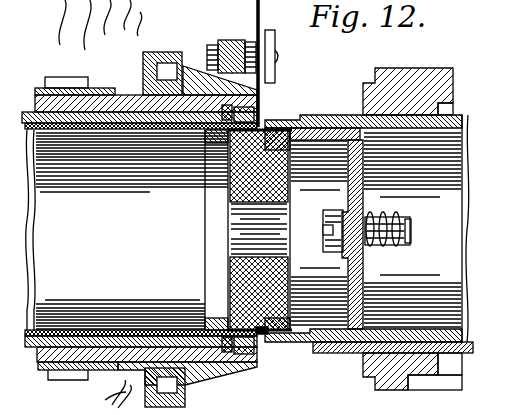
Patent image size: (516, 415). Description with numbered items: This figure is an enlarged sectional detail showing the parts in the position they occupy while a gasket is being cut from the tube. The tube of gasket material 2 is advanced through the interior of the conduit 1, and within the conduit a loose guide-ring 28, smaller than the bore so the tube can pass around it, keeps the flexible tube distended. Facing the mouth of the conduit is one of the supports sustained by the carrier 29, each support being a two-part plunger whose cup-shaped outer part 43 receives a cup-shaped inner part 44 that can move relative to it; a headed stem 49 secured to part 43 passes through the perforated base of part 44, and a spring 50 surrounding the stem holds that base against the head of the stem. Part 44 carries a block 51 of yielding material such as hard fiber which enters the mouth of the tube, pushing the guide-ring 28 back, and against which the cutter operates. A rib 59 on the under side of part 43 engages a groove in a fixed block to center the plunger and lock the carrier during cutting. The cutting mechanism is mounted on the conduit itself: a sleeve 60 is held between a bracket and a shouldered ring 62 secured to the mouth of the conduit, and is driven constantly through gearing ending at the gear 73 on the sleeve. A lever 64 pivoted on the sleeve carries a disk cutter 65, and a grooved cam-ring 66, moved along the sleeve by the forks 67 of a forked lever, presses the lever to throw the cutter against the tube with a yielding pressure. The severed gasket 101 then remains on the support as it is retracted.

The conduit 1 is at (31, 111).
The tube of gasket material 2 is at (83, 132).
The loose guide-ring 28 is at (240, 230).
The carrier 29 is at (450, 70).
The cup-shaped plunger part 43 is at (360, 118).
The inner plunger part 44 is at (364, 292).
The headed stem 49 is at (408, 238).
The spring 50 is at (398, 216).
The block 51 is at (288, 194).
The rib 59 is at (470, 348).
The sleeve 60 is at (127, 95).
The ring 62 is at (259, 108).
The lever 64 is at (246, 40).
The disk cutter 65 is at (261, 21).
The grooved cam-ring 66 is at (193, 66).
The forks of forked lever 67 is at (170, 52).
The gear 73 is at (48, 378).
The gasket 101 is at (263, 333).